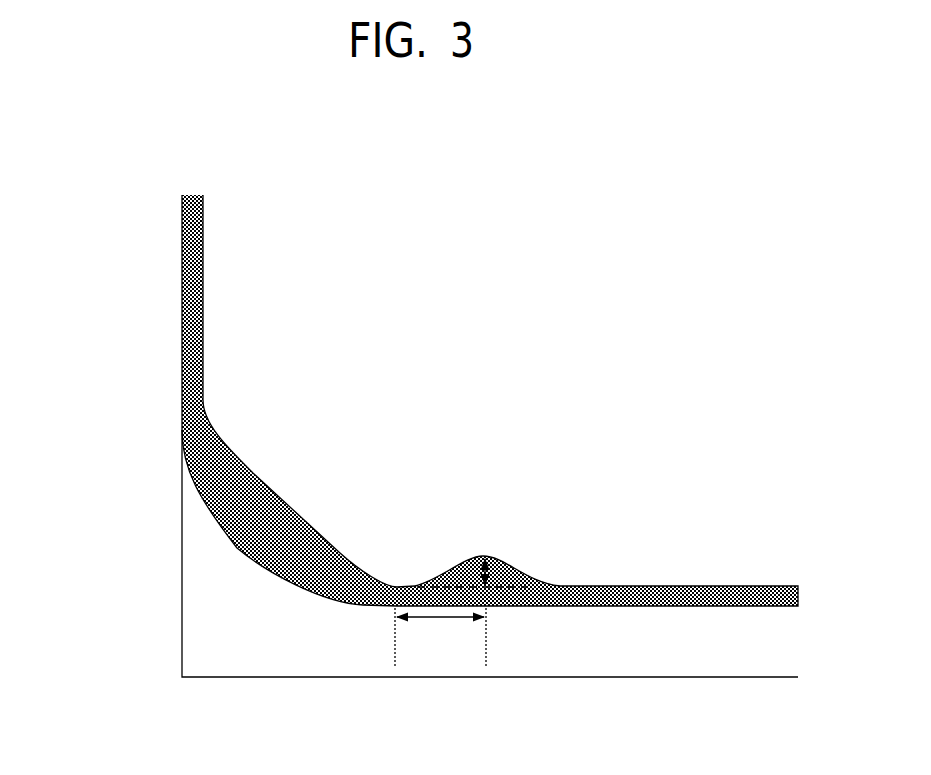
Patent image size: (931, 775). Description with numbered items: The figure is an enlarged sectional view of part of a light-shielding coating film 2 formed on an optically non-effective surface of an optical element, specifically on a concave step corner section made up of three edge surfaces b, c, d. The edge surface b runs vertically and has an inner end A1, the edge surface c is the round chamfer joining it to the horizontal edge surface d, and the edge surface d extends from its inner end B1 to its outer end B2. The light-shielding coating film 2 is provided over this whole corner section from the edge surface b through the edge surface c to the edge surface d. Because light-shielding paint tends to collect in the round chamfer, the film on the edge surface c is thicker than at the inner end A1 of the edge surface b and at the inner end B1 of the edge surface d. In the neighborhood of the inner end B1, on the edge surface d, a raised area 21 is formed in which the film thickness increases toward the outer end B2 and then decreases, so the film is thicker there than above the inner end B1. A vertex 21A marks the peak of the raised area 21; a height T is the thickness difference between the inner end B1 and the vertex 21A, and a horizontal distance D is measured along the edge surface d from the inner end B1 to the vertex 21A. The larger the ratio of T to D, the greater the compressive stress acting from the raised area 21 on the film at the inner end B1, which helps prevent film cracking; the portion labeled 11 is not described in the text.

The light-shielding coating film 2 is at (270, 497).
The raised area 21 is at (545, 542).
The vertex of the raised area 21A is at (496, 553).
The flat portion 11 is at (606, 615).
The edge surface b is at (182, 265).
The edge surface c is at (237, 548).
The edge surface d is at (597, 607).
The inner end of the edge surface b A1 is at (177, 405).
The inner end of the edge surface d B1 is at (393, 608).
The outer end of the edge surface d B2 is at (798, 609).
The horizontal distance D is at (440, 637).
The film thickness difference T is at (472, 573).